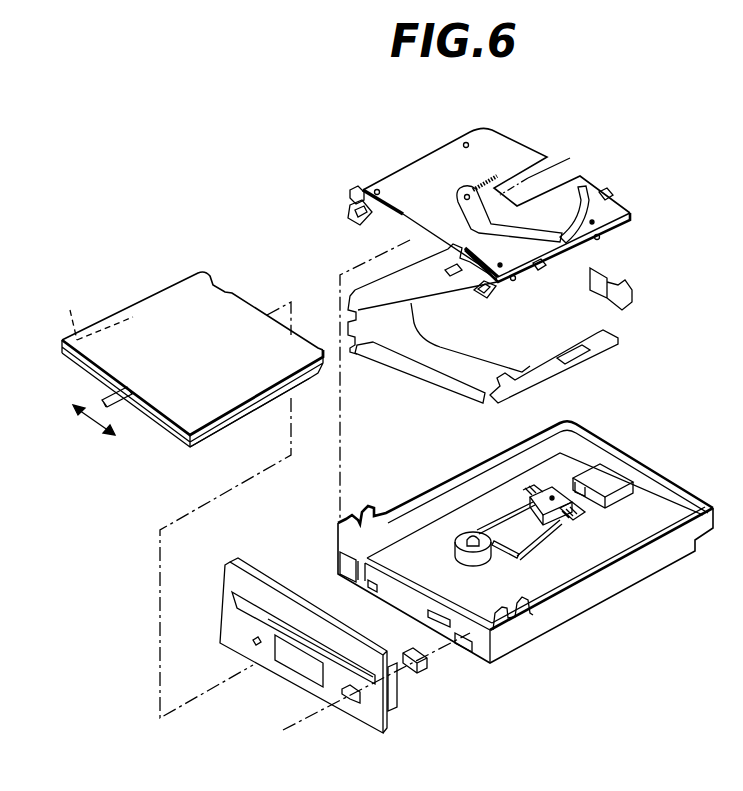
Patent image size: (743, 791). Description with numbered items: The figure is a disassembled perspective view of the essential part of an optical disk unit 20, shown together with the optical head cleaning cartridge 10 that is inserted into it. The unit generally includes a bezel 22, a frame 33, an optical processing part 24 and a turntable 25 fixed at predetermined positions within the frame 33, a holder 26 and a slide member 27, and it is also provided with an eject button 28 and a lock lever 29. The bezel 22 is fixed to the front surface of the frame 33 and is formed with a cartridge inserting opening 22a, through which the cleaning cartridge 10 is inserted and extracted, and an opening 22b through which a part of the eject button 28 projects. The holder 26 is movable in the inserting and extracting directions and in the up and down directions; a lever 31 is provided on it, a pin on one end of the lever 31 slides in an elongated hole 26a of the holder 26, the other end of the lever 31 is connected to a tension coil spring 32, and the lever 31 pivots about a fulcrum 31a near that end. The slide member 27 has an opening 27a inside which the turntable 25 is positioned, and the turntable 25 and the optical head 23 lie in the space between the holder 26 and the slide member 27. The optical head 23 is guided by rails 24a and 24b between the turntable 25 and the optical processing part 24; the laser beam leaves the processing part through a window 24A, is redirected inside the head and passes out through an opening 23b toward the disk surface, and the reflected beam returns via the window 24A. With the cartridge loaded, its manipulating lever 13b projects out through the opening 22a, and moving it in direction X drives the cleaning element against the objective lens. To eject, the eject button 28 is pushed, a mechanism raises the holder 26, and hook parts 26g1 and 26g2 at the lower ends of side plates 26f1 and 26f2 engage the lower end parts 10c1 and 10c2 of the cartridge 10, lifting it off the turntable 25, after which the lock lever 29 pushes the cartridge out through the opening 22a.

The optical head cleaning cartridge 10 is at (112, 314).
The lower end part 10c1 is at (227, 430).
The lower end part 10c2 is at (83, 311).
The manipulating lever 13b is at (102, 400).
The direction X is at (90, 424).
The optical disk unit 20 is at (658, 221).
The bezel 22 is at (235, 566).
The cartridge inserting opening 22a is at (257, 610).
The opening 22b is at (352, 703).
The optical head 23 is at (552, 488).
The opening 23b is at (560, 528).
The optical processing part 24 is at (622, 483).
The window 24A is at (583, 472).
The rail 24a is at (495, 517).
The rail 24b is at (530, 535).
The turntable 25 is at (455, 557).
The holder 26 is at (428, 165).
The elongated hole 26a is at (582, 188).
The side plate 26f1 is at (540, 268).
The side plate 26f2 is at (350, 195).
The hook part 26g1 is at (492, 297).
The hook part 26g2 is at (350, 212).
The slide member 27 is at (463, 366).
The opening 27a is at (422, 323).
The eject button 28 is at (428, 670).
The lock lever 29 is at (600, 273).
The lever 31 is at (512, 235).
The fulcrum 31a is at (460, 197).
The tension coil spring 32 is at (492, 185).
The frame 33 is at (437, 488).